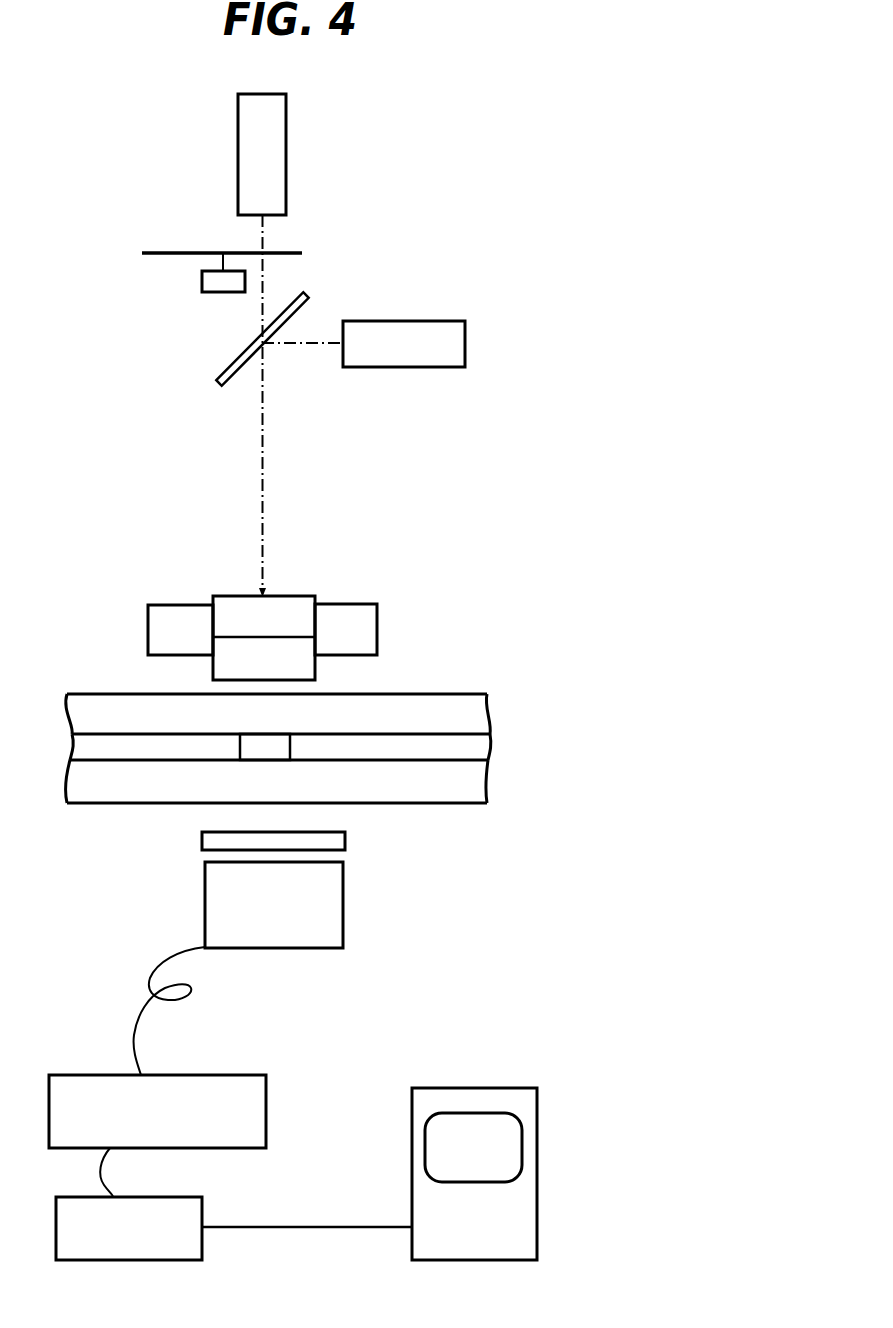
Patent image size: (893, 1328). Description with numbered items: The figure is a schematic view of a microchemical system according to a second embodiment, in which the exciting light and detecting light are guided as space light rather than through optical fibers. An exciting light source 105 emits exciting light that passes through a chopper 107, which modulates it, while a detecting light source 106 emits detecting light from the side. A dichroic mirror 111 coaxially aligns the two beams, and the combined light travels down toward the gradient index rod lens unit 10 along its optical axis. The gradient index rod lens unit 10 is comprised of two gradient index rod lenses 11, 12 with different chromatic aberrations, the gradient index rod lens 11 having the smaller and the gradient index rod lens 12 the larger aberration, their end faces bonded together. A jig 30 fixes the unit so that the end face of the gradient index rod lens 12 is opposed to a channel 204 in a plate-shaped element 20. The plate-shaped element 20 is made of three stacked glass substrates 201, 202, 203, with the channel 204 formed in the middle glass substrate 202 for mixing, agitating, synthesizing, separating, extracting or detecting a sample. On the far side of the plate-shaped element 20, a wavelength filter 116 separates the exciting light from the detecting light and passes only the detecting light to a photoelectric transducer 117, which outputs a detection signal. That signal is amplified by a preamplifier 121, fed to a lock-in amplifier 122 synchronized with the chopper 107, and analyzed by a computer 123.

The exciting light source 105 is at (286, 142).
The chopper 107 is at (175, 252).
The dichroic mirror 111 is at (228, 369).
The detecting light source 106 is at (417, 321).
The gradient index rod lens unit 10 is at (298, 601).
The gradient index rod lens 11 is at (297, 622).
The gradient index rod lens 12 is at (302, 665).
The jig 30 is at (337, 604).
The plate-shaped element 20 is at (344, 769).
The glass substrate 201 is at (465, 710).
The glass substrate 202 is at (455, 745).
The glass substrate 203 is at (465, 777).
The channel 204 is at (273, 747).
The wavelength filter 116 is at (345, 841).
The photoelectric transducer 117 is at (343, 892).
The preamplifier 121 is at (212, 1075).
The lock-in amplifier 122 is at (175, 1197).
The computer 123 is at (490, 1088).